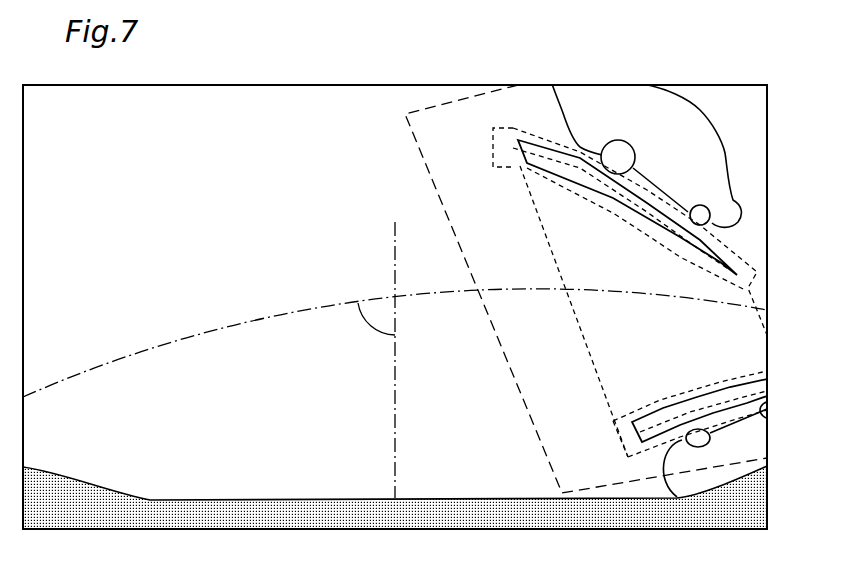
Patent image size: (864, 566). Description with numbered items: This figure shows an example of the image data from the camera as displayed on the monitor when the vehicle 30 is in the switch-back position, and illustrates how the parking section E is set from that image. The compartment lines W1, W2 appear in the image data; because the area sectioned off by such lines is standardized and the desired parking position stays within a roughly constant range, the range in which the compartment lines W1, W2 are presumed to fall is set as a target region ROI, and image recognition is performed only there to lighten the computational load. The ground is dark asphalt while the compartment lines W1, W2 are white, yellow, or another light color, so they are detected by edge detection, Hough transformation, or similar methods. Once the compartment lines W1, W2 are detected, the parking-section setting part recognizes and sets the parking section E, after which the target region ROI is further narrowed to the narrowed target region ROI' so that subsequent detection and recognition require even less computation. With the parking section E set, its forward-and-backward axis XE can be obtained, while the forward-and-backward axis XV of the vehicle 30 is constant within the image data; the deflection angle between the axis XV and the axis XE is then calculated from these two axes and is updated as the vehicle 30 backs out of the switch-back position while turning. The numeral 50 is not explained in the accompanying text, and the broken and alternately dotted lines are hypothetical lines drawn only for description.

The vehicle 50 is at (727, 157).
The vehicle 30 is at (157, 508).
The target region ROI is at (527, 289).
The narrowed target region ROI' is at (622, 308).
The axis of the vehicle XV is at (398, 343).
The axis of the parking section XE is at (220, 328).
The parking section E is at (590, 350).
The compartment line W1 is at (618, 200).
The compartment line W2 is at (693, 400).